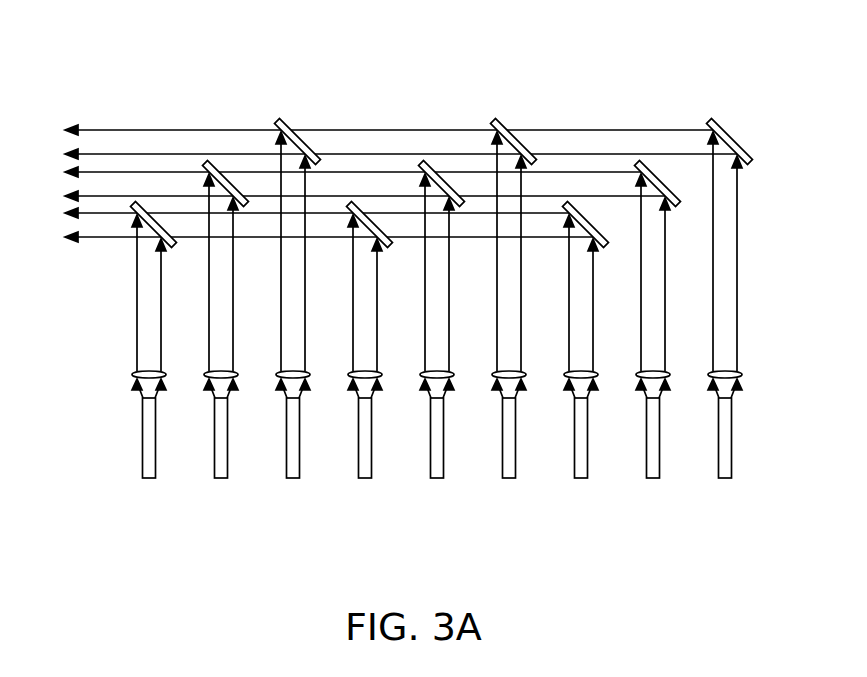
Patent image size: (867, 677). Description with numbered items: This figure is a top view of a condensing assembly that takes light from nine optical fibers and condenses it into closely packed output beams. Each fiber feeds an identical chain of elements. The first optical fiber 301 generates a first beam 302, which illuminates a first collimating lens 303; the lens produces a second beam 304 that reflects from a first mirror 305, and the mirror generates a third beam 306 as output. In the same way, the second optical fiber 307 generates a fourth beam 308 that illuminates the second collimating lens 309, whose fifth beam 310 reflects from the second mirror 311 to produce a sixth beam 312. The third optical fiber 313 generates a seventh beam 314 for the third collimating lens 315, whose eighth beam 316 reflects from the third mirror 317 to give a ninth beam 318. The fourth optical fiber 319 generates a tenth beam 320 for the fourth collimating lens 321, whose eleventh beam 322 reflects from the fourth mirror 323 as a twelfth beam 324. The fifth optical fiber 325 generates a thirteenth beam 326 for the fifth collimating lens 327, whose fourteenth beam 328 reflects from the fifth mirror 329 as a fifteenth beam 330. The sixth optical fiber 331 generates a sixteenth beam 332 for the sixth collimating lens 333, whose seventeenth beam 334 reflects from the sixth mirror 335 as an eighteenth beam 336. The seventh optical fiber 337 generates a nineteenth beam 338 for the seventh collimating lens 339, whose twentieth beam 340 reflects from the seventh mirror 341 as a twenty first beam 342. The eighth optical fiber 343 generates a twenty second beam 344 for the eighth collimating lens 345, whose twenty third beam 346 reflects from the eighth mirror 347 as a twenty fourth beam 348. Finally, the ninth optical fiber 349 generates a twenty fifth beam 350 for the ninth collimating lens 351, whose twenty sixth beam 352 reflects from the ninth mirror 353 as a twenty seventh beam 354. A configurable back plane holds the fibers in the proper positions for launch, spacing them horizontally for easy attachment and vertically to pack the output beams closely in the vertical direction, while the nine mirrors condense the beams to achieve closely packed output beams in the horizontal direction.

The first optical fiber 301 is at (144, 478).
The first beam 302 is at (138, 384).
The first collimating lens 303 is at (133, 374).
The second beam 304 is at (137, 303).
The first mirror 305 is at (133, 204).
The third beam 306 is at (112, 213).
The second optical fiber 307 is at (216, 478).
The fourth beam 308 is at (207, 382).
The second collimating lens 309 is at (205, 375).
The fifth beam 310 is at (207, 263).
The second mirror 311 is at (205, 163).
The sixth beam 312 is at (184, 172).
The third optical fiber 313 is at (288, 478).
The seventh beam 314 is at (279, 382).
The third collimating lens 315 is at (277, 375).
The eighth beam 316 is at (279, 263).
The third mirror 317 is at (277, 121).
The ninth beam 318 is at (243, 130).
The fourth optical fiber 319 is at (360, 478).
The tenth beam 320 is at (351, 382).
The fourth collimating lens 321 is at (349, 375).
The eleventh beam 322 is at (351, 263).
The fourth mirror 323 is at (349, 204).
The twelfth beam 324 is at (335, 213).
The fifth optical fiber 325 is at (432, 478).
The thirteenth beam 326 is at (423, 382).
The fifth collimating lens 327 is at (421, 375).
The fourteenth beam 328 is at (423, 263).
The fifth mirror 329 is at (421, 163).
The fifteenth beam 330 is at (400, 172).
The sixth optical fiber 331 is at (504, 478).
The sixteenth beam 332 is at (495, 382).
The sixth collimating lens 333 is at (493, 375).
The seventeenth beam 334 is at (495, 263).
The sixth mirror 335 is at (493, 121).
The eighteenth beam 336 is at (455, 130).
The seventh optical fiber 337 is at (576, 478).
The nineteenth beam 338 is at (567, 382).
The seventh collimating lens 339 is at (565, 375).
The twentieth beam 340 is at (567, 263).
The seventh mirror 341 is at (565, 204).
The twenty first beam 342 is at (559, 213).
The eighth optical fiber 343 is at (648, 478).
The twenty second beam 344 is at (639, 382).
The eighth collimating lens 345 is at (637, 375).
The twenty third beam 346 is at (639, 263).
The eighth mirror 347 is at (637, 163).
The twenty fourth beam 348 is at (612, 172).
The ninth optical fiber 349 is at (720, 478).
The twenty fifth beam 350 is at (711, 382).
The ninth collimating lens 351 is at (709, 375).
The twenty sixth beam 352 is at (711, 263).
The ninth mirror 353 is at (709, 121).
The twenty seventh beam 354 is at (670, 130).